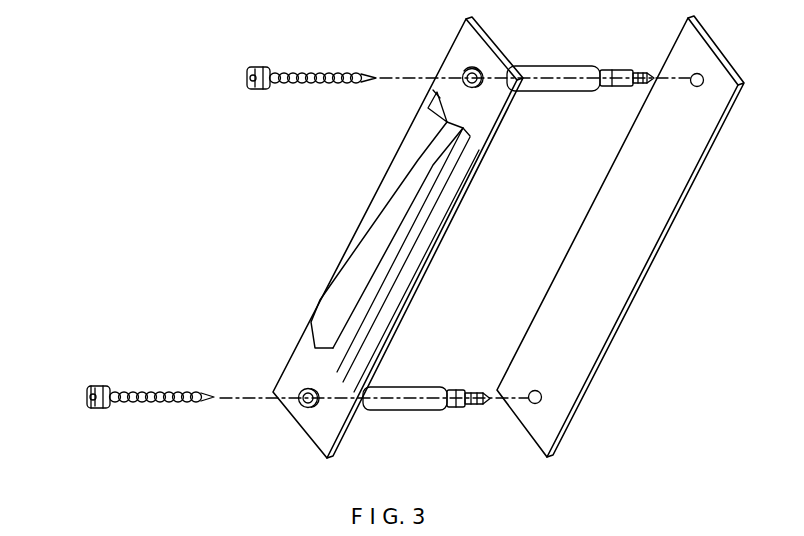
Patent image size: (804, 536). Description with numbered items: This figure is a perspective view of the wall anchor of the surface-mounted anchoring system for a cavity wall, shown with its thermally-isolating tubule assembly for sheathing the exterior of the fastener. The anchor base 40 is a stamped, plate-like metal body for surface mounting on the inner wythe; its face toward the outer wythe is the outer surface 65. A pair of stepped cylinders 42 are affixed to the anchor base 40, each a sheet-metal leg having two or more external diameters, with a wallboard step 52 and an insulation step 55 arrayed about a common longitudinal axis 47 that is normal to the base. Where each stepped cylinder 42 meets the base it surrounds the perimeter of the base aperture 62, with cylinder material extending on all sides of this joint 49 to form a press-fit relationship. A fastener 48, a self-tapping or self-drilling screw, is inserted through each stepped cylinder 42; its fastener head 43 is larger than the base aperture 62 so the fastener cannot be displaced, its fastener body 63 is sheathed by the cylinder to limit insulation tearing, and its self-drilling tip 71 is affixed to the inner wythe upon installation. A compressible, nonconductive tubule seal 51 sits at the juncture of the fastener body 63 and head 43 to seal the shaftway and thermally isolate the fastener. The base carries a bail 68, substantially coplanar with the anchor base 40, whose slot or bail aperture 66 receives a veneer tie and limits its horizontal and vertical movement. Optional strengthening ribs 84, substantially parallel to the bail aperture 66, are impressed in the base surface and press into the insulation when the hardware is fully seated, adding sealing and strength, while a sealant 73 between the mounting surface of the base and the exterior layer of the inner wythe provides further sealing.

The anchor base 40 is at (433, 257).
The stepped cylinder 42 is at (508, 238).
The fastener head 43 is at (90, 397).
The longitudinal axis 47 is at (426, 388).
The fastener 48 is at (204, 240).
The joint 49 is at (475, 64).
The tubule seal 51 is at (103, 388).
The wallboard step 52 is at (612, 70).
The insulation step 55 is at (538, 66).
The base aperture 62 is at (460, 76).
The fastener body 63 is at (155, 405).
The outer surface 65 is at (318, 437).
The bail aperture 66 is at (387, 240).
The bail 68 is at (373, 212).
The self-drilling tip 71 is at (206, 402).
The sealant 73 is at (640, 247).
The strengthening ribs 84 is at (437, 96).